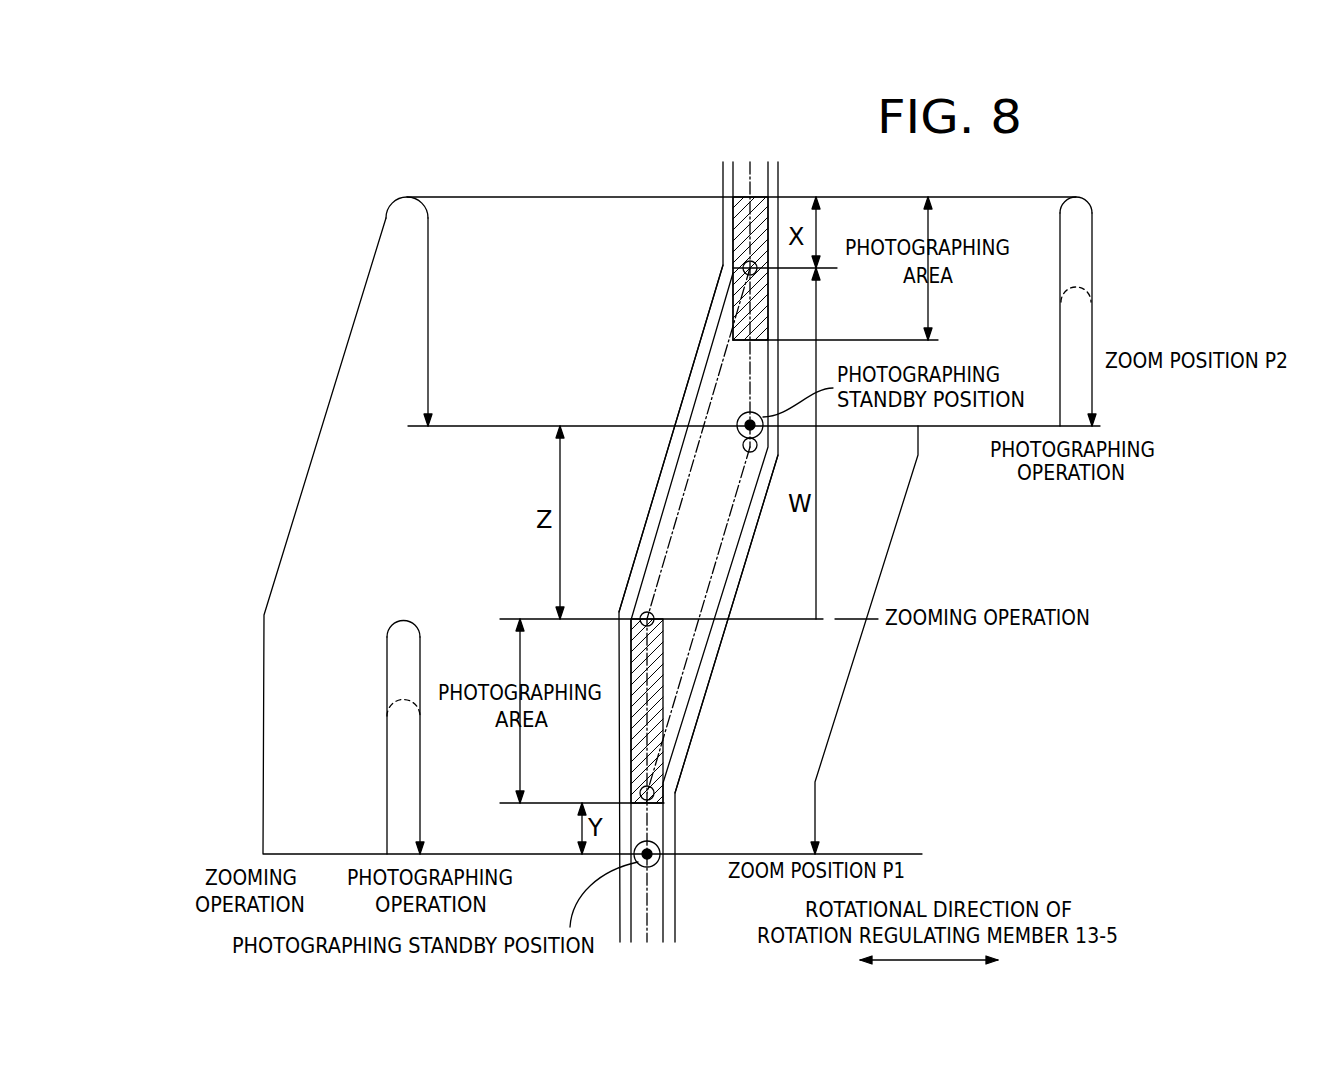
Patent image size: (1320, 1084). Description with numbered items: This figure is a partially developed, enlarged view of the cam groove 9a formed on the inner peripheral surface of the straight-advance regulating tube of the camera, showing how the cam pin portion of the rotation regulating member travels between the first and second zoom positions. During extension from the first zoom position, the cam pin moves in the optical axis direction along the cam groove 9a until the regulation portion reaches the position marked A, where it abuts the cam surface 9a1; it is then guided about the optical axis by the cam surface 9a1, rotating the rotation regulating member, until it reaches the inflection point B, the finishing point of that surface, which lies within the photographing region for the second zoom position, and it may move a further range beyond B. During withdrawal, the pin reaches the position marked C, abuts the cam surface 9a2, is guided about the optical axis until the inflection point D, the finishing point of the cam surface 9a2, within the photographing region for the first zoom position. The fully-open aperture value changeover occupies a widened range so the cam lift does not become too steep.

The cam groove 9a is at (663, 898).
The cam surface 9a1 is at (672, 482).
The cam surface 9a2 is at (712, 643).
The position A is at (641, 613).
The inflection point B is at (744, 267).
The position C is at (757, 445).
The inflection point D is at (653, 789).